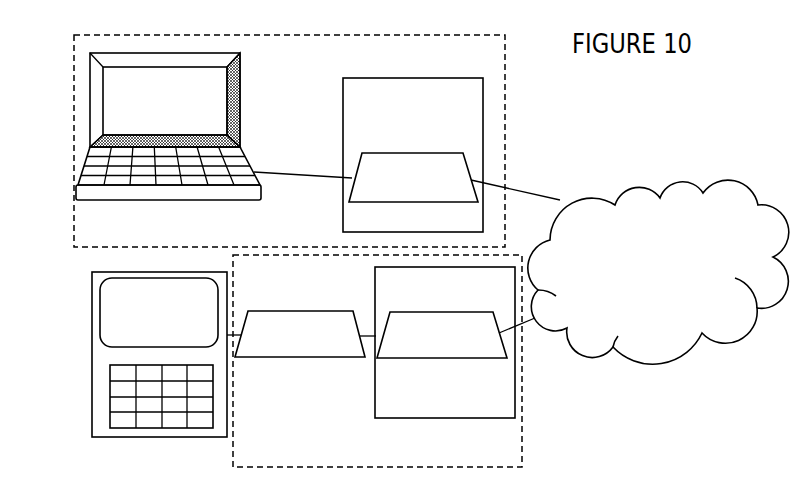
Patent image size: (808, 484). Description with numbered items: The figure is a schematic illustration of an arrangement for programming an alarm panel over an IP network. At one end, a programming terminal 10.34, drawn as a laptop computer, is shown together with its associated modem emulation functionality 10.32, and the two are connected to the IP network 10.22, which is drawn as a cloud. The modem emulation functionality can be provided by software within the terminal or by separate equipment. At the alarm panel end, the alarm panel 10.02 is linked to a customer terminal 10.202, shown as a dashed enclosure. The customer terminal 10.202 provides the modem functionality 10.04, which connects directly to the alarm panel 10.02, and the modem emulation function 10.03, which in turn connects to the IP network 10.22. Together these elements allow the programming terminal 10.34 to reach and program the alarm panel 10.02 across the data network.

The programming terminal 10.34 is at (168, 126).
The modem emulation functionality 10.32 is at (413, 155).
The IP network 10.22 is at (658, 272).
The alarm panel 10.02 is at (159, 354).
The modem functionality 10.04 is at (300, 334).
The modem emulation function 10.03 is at (445, 342).
The customer terminal 10.202 is at (345, 433).